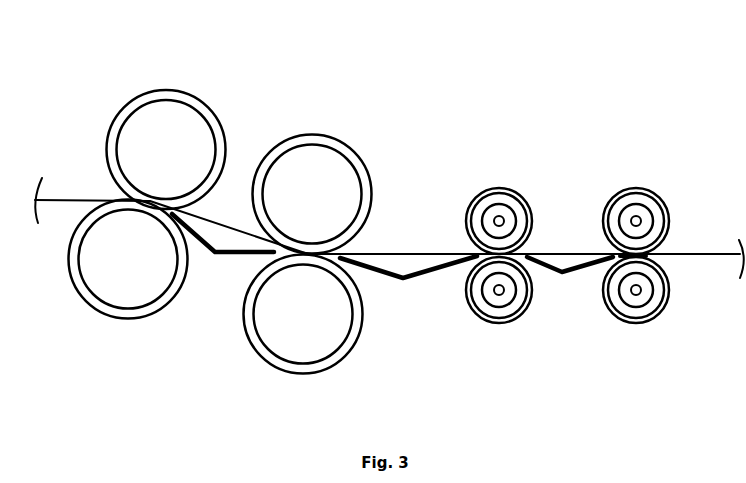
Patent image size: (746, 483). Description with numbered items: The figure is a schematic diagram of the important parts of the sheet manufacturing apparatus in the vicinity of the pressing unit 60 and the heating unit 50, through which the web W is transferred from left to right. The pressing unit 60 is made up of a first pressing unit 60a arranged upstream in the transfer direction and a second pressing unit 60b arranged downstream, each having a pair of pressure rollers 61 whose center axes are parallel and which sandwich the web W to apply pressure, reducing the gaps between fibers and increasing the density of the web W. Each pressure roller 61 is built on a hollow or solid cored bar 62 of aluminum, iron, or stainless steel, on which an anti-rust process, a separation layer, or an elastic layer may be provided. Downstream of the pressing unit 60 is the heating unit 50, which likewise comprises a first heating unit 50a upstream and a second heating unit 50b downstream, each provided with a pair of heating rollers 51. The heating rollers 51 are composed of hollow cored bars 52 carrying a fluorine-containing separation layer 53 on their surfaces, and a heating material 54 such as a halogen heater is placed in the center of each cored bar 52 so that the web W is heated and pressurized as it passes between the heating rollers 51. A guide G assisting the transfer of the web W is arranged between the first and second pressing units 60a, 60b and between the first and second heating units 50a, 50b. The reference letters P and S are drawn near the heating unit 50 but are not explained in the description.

The heating unit 50 is at (717, 116).
The first heating unit 50a is at (536, 153).
The second heating unit 50b is at (661, 153).
The heating rollers 51 is at (500, 188).
The cored bar 52 is at (480, 203).
The separation layer 53 is at (484, 195).
The heating material 54 is at (495, 220).
The pressing unit 60 is at (406, 79).
The first pressing unit 60a is at (207, 68).
The second pressing unit 60b is at (342, 113).
The pressure rollers 61 is at (123, 107).
The cored bar 62 is at (213, 140).
The web W is at (68, 200).
The guide G is at (223, 256).
The pressing position P is at (559, 254).
The sheet S is at (698, 254).